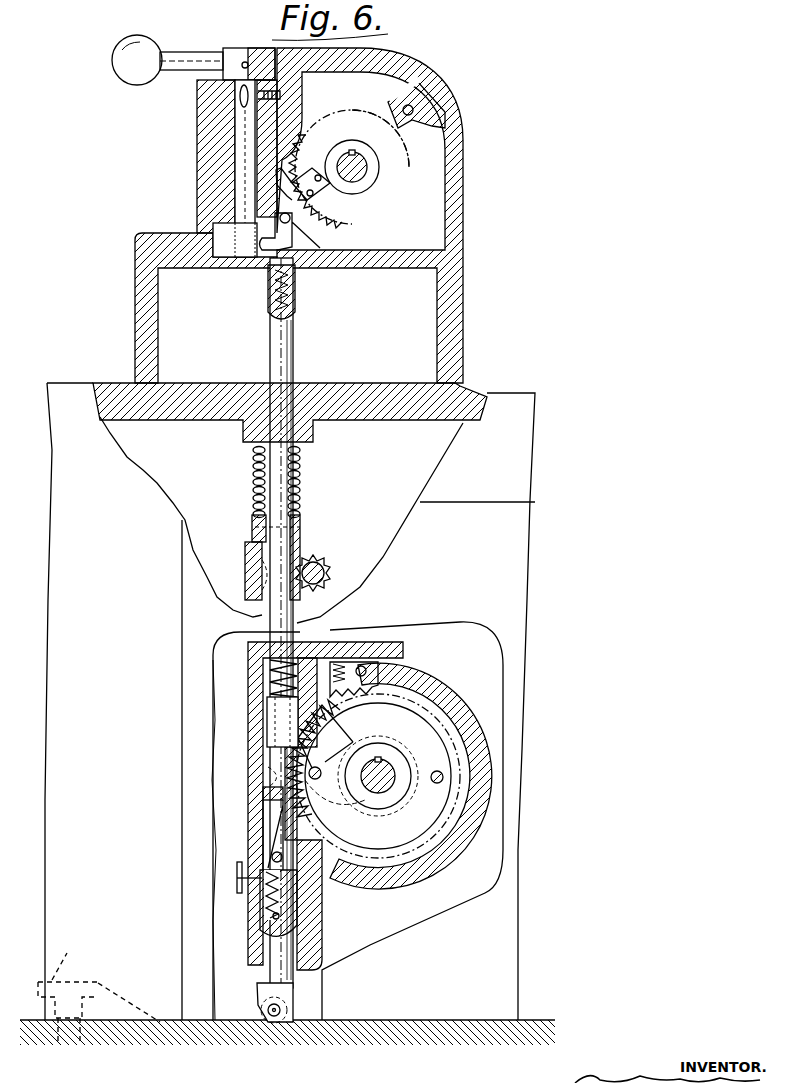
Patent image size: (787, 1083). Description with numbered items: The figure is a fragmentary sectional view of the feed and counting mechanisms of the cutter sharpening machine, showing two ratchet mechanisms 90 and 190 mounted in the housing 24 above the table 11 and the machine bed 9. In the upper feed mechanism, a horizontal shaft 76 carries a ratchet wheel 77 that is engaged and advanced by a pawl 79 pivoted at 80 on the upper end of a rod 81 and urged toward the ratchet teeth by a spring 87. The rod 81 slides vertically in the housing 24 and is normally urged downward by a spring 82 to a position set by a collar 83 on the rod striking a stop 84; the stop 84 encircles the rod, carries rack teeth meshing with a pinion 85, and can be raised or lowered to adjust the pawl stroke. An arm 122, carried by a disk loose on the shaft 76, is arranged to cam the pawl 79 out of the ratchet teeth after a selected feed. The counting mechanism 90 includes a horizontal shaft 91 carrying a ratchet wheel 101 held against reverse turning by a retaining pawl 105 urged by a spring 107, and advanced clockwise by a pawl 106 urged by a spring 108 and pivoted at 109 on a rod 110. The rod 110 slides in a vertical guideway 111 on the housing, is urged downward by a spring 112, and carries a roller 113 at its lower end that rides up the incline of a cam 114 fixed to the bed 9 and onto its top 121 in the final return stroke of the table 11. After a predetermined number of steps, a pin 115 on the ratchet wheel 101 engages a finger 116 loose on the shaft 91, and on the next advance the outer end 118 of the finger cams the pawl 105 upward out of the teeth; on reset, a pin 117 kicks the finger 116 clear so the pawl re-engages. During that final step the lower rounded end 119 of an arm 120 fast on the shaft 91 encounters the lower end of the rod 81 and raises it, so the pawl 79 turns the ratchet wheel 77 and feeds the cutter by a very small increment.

The machine bed 9 is at (375, 1032).
The table 11 is at (495, 940).
The housing 24 is at (470, 392).
The horizontal shaft 76 is at (368, 165).
The ratchet wheel 77 is at (397, 188).
The pawl 79 is at (282, 192).
The pivot 80 is at (288, 245).
The rod 81 is at (292, 338).
The spring 82 is at (303, 480).
The collar 83 is at (303, 530).
The stop 84 is at (245, 552).
The pinion 85 is at (333, 580).
The spring 87 is at (272, 292).
The ratchet mechanism 90 is at (416, 655).
The horizontal shaft 91 is at (392, 780).
The ratchet wheel 101 is at (385, 708).
The retaining pawl 105 is at (370, 660).
The pawl 106 is at (280, 836).
The spring 107 is at (345, 662).
The spring 108 is at (265, 915).
The pivot 109 is at (273, 858).
The rod 110 is at (283, 950).
The vertical guideway 111 is at (300, 917).
The spring 112 is at (268, 676).
The roller 113 is at (266, 1022).
The cam 114 is at (123, 986).
The pin 115 is at (318, 782).
The finger 116 is at (325, 730).
The pin 117 is at (438, 771).
The outer end 118 is at (285, 722).
The lower rounded end 119 is at (263, 783).
The arm 120 is at (345, 800).
The top 121 is at (67, 953).
The arm 122 is at (290, 220).
The ratchet mechanism 190 is at (422, 144).